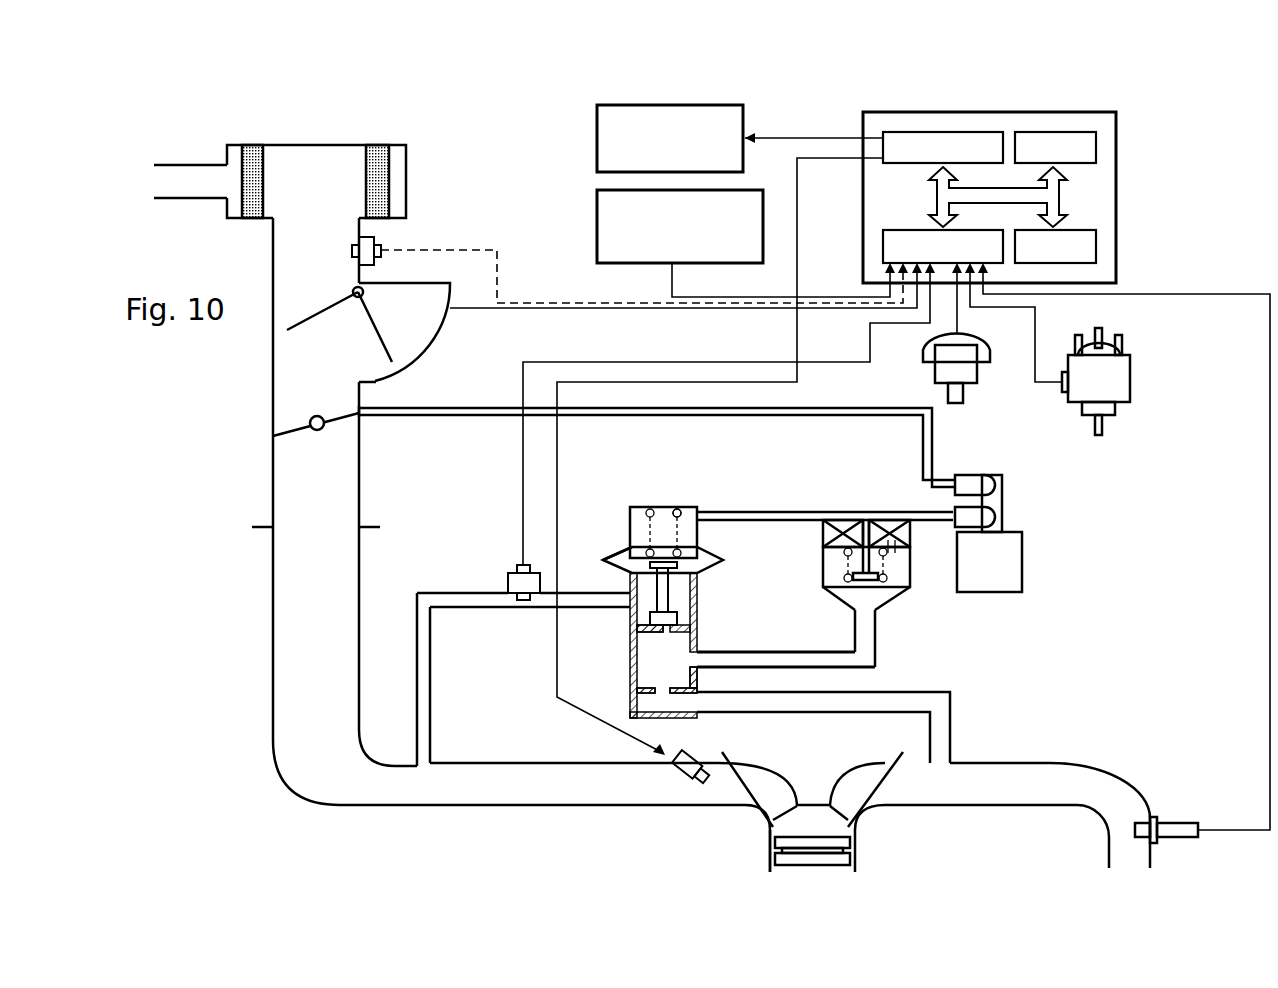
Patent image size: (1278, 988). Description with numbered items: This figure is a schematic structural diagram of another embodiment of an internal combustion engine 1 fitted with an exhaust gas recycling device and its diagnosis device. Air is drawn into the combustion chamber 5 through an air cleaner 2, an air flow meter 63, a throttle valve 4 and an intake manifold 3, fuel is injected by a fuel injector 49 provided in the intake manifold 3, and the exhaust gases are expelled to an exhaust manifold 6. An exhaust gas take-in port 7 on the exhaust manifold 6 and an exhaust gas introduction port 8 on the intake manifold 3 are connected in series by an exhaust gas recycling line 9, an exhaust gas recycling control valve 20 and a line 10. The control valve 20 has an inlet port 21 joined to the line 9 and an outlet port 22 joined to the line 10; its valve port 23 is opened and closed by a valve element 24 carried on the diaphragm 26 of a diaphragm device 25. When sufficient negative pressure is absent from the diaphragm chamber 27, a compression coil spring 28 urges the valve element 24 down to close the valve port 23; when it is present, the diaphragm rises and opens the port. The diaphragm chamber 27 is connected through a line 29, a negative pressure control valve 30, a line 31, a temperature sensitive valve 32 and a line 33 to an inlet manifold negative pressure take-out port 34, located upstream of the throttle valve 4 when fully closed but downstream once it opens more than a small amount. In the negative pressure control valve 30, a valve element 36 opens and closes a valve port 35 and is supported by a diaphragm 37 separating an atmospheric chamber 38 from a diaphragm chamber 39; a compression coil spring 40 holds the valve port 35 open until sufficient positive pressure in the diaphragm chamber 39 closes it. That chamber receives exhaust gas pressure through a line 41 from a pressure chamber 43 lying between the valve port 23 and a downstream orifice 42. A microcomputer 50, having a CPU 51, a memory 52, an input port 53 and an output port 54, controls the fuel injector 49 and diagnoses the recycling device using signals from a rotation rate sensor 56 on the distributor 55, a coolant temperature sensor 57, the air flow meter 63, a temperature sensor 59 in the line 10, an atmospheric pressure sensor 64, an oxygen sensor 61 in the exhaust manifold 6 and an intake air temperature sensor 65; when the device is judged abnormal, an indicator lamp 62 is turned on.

The internal combustion engine 1 is at (860, 848).
The air cleaner 2 is at (330, 145).
The intake manifold 3 is at (560, 770).
The throttle valve 4 is at (273, 436).
The combustion chamber 5 is at (772, 812).
The exhaust manifold 6 is at (1057, 770).
The exhaust gas take-in port 7 is at (955, 762).
The exhaust gas introduction port 8 is at (425, 770).
The exhaust gas recycling line 9 is at (950, 696).
The line 10 is at (430, 683).
The exhaust gas recycling control valve 20 is at (698, 620).
The inlet port 21 is at (692, 703).
The outlet port 22 is at (622, 600).
The valve port 23 is at (660, 634).
The valve element 24 is at (672, 608).
The diaphragm device 25 is at (665, 507).
The diaphragm 26 is at (702, 560).
The diaphragm chamber 27 is at (630, 545).
The compression coil spring 28 is at (681, 506).
The line 29 is at (735, 512).
The negative pressure control valve 30 is at (882, 565).
The line 31 is at (932, 522).
The temperature sensitive valve 32 is at (1015, 561).
The line 33 is at (755, 416).
The inlet manifold negative pressure take-out port 34 is at (362, 416).
The valve port 35 is at (880, 532).
The valve element 36 is at (866, 590).
The diaphragm 37 is at (893, 596).
The atmospheric chamber 38 is at (836, 566).
The diaphragm chamber 39 is at (863, 610).
The compression coil spring 40 is at (841, 536).
The line 41 is at (797, 662).
The orifice 42 is at (658, 702).
The pressure chamber 43 is at (698, 680).
The fuel injector 49 is at (683, 772).
The microcomputer 50 is at (1020, 197).
The central processing unit 51 is at (1097, 250).
The memory 52 is at (1097, 150).
The input port 53 is at (883, 250).
The output port 54 is at (900, 164).
The distributor 55 is at (1120, 373).
The rotation rate sensor 56 is at (1062, 388).
The coolant temperature sensor 57 is at (945, 373).
The temperature sensor 59 is at (508, 578).
The oxygen sensor 61 is at (1166, 822).
The indicator lamp 62 is at (597, 146).
The air flow meter 63 is at (407, 344).
The atmospheric pressure sensor 64 is at (597, 236).
The intake air temperature sensor 65 is at (375, 260).